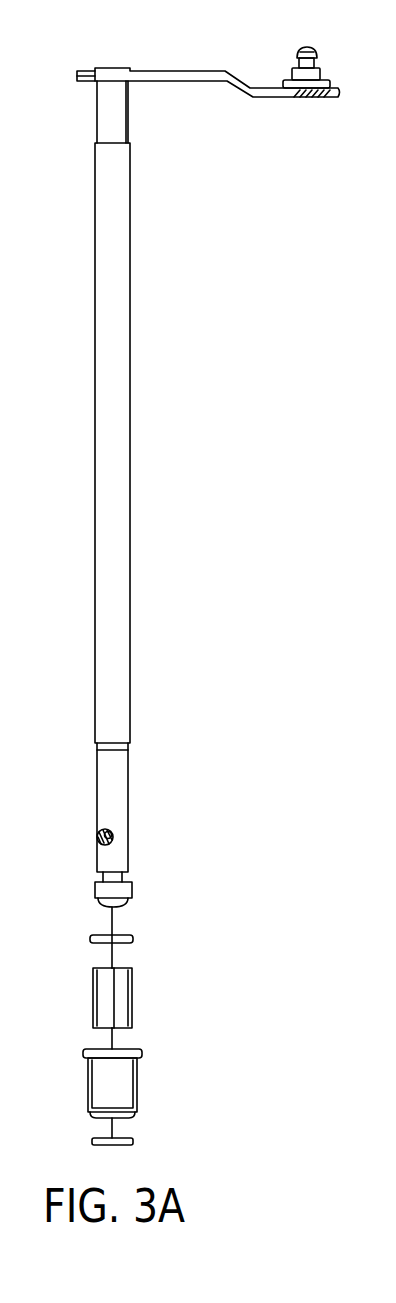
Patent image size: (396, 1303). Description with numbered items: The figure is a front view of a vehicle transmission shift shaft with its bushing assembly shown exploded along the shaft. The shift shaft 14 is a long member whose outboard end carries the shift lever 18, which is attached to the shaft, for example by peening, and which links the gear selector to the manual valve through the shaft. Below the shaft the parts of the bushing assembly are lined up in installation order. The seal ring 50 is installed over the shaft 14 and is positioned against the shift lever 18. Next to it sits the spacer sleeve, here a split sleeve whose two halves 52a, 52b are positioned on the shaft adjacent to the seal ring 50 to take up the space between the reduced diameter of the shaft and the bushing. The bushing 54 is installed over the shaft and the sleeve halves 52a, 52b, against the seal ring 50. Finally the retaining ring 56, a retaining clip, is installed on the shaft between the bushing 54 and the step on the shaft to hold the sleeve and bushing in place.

The shift shaft 14 is at (112, 167).
The shift lever 18 is at (255, 94).
The seal ring 50 is at (133, 938).
The split spacer sleeve half 52a is at (90, 997).
The split spacer sleeve half 52b is at (132, 995).
The bushing 54 is at (137, 1085).
The retaining ring 56 is at (133, 1142).